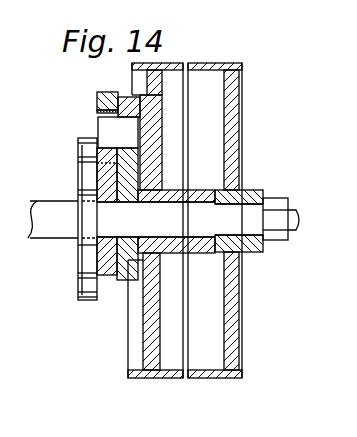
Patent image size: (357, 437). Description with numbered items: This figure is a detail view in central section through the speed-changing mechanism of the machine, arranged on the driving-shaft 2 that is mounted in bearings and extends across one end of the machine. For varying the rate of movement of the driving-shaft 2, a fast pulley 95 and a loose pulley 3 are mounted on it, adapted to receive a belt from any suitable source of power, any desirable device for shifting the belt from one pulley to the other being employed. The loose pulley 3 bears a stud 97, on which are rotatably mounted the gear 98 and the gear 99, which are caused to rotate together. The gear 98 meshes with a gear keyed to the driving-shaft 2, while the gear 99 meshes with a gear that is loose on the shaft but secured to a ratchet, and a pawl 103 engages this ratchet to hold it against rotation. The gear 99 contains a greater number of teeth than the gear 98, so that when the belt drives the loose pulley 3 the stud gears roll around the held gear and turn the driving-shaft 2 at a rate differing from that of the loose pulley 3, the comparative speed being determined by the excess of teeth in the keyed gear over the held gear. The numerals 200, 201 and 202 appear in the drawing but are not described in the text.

The driving-shaft 2 is at (36, 201).
The loose pulley 3 is at (184, 64).
The fast pulley 95 is at (243, 147).
The stud 97 is at (101, 122).
The gear 98 is at (124, 96).
The gear 99 is at (99, 97).
The pawl 103 is at (92, 171).
The bearing cup 200 is at (129, 280).
The bearing cone 201 is at (103, 285).
The collar 202 is at (85, 268).